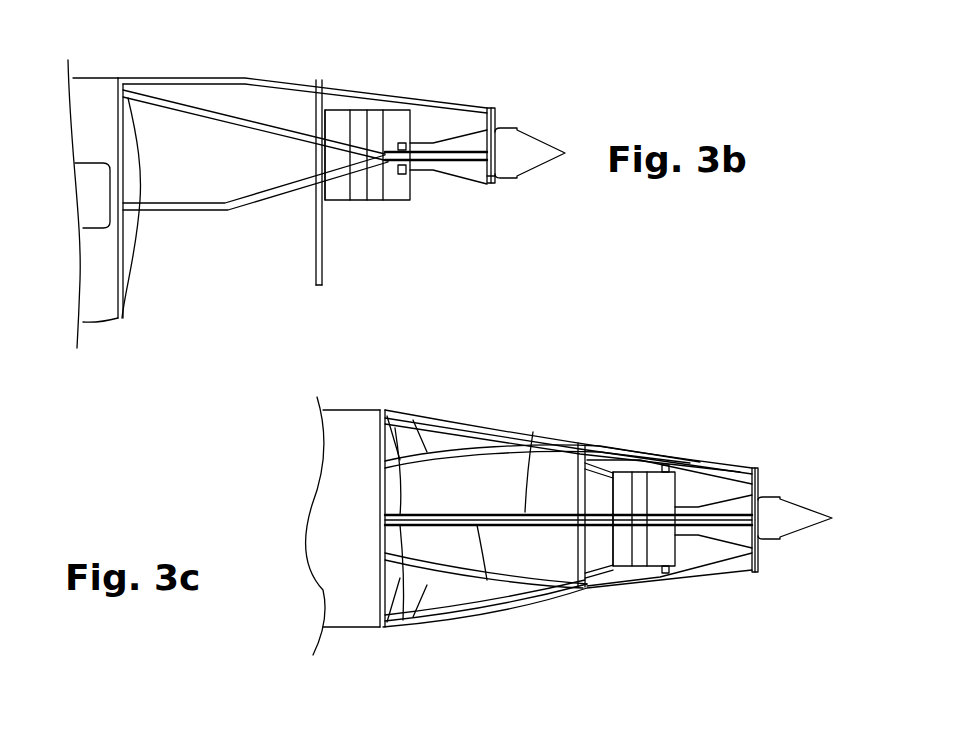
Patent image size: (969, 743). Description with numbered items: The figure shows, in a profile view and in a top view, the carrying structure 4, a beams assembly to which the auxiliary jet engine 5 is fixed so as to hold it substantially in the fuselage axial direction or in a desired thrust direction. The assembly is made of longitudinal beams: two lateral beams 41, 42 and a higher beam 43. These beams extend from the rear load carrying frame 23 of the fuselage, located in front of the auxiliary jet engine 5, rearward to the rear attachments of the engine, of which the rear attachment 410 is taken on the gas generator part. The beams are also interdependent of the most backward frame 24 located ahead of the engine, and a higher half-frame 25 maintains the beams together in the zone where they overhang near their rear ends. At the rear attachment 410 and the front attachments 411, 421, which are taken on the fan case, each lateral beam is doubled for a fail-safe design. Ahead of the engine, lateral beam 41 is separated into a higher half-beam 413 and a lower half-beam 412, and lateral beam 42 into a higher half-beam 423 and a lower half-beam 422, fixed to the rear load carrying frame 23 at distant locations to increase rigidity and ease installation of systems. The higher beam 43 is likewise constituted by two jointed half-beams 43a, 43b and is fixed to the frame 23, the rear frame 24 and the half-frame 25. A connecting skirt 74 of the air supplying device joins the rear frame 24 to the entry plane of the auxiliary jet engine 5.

In FIG. 3b, the carrying structure 4 is at (178, 275).
In FIG. 3c, the carrying structure 4 is at (516, 385).
In FIG. 3b, the auxiliary jet engine 5 is at (375, 195).
In FIG. 3c, the auxiliary jet engine 5 is at (643, 472).
In FIG. 3b, the rear load carrying frame 23 is at (117, 277).
In FIG. 3c, the rear load carrying frame 23 is at (382, 446).
In FIG. 3b, the most backward frame 24 is at (321, 90).
In FIG. 3c, the most backward frame 24 is at (583, 442).
In FIG. 3b, the higher half-frame 25 is at (496, 120).
In FIG. 3c, the higher half-frame 25 is at (767, 473).
In FIG. 3b, the lateral beam 41 is at (437, 162).
In FIG. 3c, the lateral beam 41 is at (720, 570).
In FIG. 3b, the rear attachment 410 is at (490, 183).
In FIG. 3b, the front attachment 411 is at (403, 175).
In FIG. 3c, the front attachment 411 is at (665, 574).
In FIG. 3b, the lower half-beam 412 is at (210, 215).
In FIG. 3c, the lower half-beam 412 is at (450, 620).
In FIG. 3b, the higher half-beam 413 is at (175, 107).
In FIG. 3c, the lateral beam 42 is at (732, 470).
In FIG. 3c, the front attachment 421 is at (665, 464).
In FIG. 3c, the lower half-beam 422 is at (495, 427).
In FIG. 3c, the higher half-beam 423 is at (410, 430).
In FIG. 3b, the higher beam 43 is at (415, 102).
In FIG. 3c, the higher beam 43 is at (518, 532).
In FIG. 3c, the half-beam 43a is at (480, 555).
In FIG. 3c, the half-beam 43b is at (525, 507).
In FIG. 3b, the connecting skirt 74 is at (333, 195).
In FIG. 3c, the connecting skirt 74 is at (593, 548).